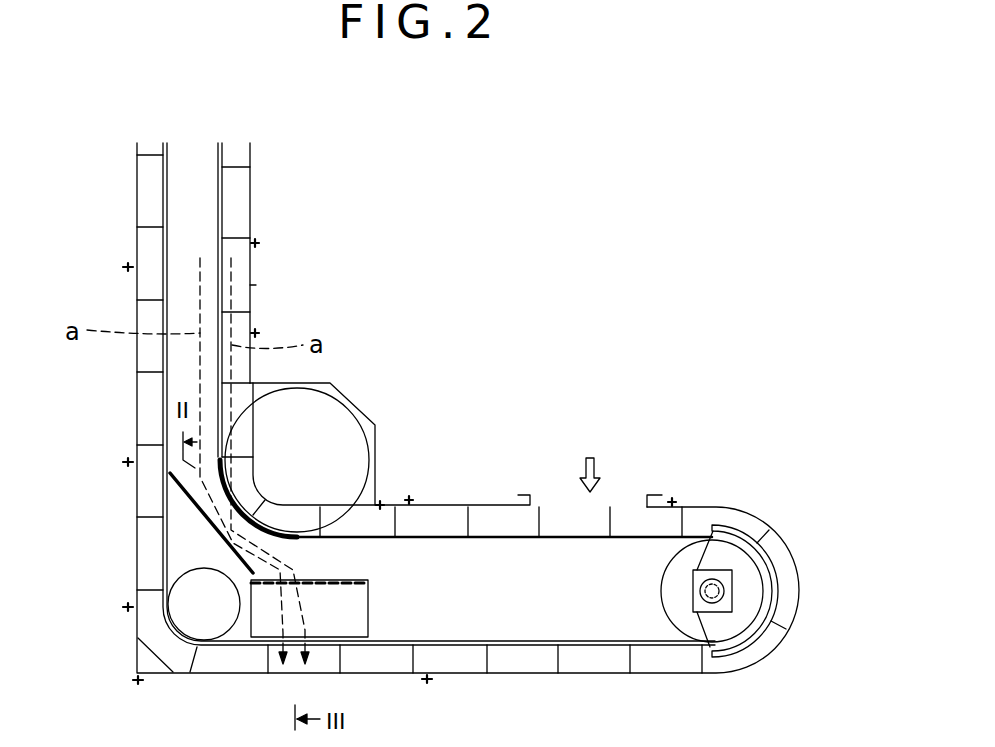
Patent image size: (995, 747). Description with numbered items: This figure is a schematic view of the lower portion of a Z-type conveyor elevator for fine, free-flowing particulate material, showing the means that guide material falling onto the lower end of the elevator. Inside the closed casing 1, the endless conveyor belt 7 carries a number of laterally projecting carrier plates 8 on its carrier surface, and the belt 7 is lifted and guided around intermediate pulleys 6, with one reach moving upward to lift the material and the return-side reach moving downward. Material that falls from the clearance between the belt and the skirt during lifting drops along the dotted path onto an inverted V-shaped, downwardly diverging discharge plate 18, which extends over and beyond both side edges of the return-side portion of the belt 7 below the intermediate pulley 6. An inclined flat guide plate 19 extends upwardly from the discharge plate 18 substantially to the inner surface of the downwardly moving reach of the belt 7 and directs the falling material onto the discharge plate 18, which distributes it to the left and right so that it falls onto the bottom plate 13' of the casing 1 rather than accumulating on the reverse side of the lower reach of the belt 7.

The closed casing 1 is at (742, 623).
The intermediate pulley 6 is at (335, 423).
The endless conveyor belt 7 is at (443, 534).
The carrier plates 8 is at (540, 522).
The bottom plate 13' is at (461, 443).
The discharge plate 18 is at (369, 608).
The guide plate 19 is at (203, 513).